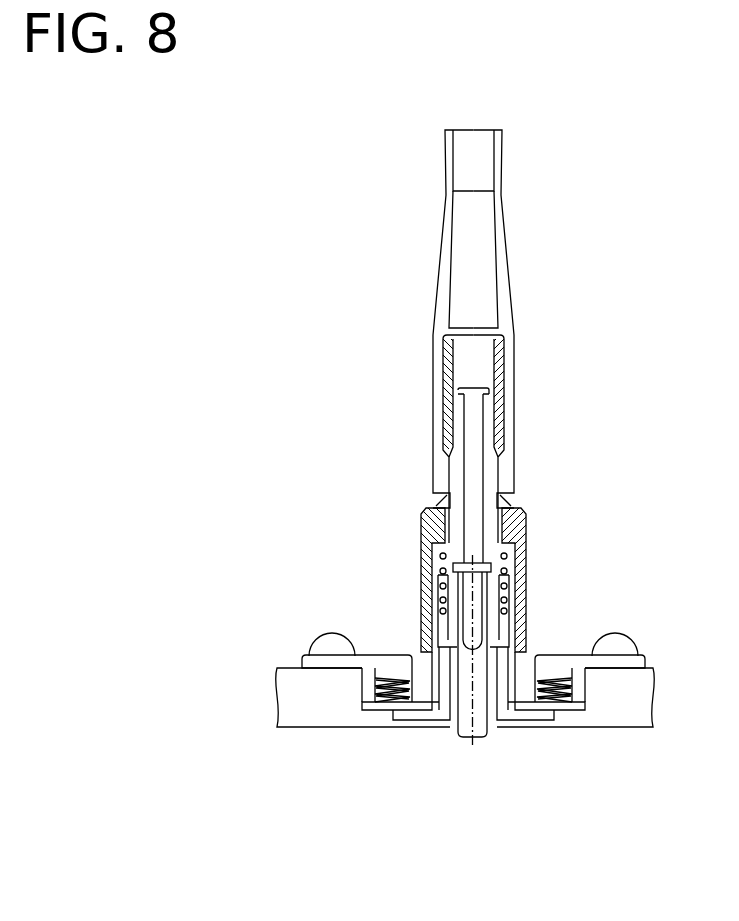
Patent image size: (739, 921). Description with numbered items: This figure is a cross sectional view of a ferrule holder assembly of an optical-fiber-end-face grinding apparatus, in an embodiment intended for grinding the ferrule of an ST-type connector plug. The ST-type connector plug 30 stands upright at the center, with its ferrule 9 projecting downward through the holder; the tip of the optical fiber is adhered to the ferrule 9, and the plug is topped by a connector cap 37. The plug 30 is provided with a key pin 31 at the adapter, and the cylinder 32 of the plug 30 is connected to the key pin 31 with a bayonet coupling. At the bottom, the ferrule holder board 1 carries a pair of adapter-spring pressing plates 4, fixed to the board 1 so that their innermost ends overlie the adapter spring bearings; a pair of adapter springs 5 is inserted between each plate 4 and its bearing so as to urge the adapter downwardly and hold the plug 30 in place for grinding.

The ferrule holder board 1 is at (302, 680).
The adapter-spring pressing plate 4 is at (565, 658).
The adapter spring 5 is at (388, 709).
The ferrule 9 is at (475, 727).
The ST-type connector plug 30 is at (553, 493).
The key pin 31 is at (522, 613).
The cylinder 32 is at (422, 540).
The connector cap 37 is at (444, 228).